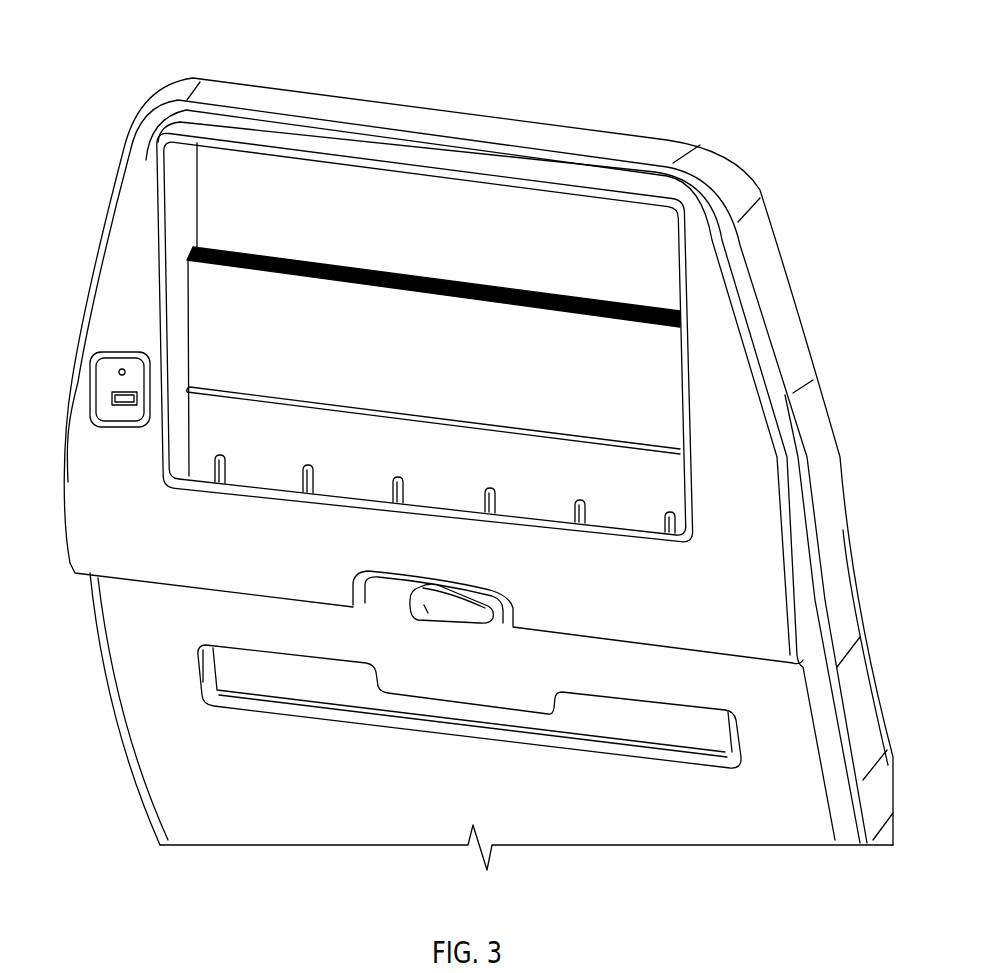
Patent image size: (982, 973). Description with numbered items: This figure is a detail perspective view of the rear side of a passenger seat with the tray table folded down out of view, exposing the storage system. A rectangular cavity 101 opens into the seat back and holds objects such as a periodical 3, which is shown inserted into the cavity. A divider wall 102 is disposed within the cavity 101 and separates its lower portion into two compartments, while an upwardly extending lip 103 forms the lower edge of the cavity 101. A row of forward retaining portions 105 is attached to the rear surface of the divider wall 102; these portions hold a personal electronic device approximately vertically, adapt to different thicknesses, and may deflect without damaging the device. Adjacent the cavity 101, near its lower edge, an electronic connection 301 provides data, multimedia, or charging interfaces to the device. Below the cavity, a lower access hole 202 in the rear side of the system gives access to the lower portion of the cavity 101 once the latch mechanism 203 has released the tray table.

The periodical 3 is at (485, 325).
The cavity 101 is at (308, 187).
The divider wall 102 is at (233, 420).
The upwardly extending lip 103 is at (273, 497).
The forward retaining portions 105 is at (497, 498).
The lower access hole 202 is at (308, 680).
The latch mechanism 203 is at (443, 622).
The electronic connection 301 is at (123, 413).